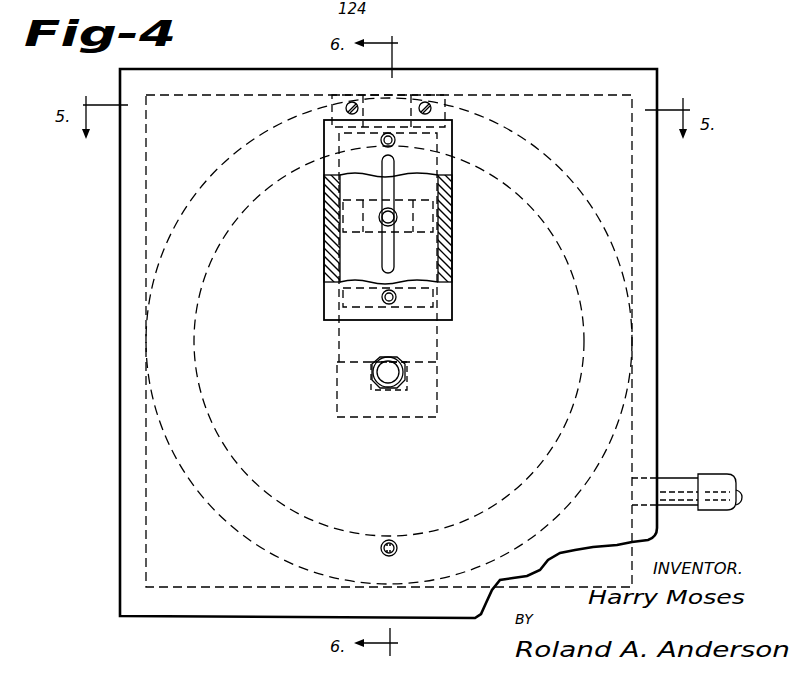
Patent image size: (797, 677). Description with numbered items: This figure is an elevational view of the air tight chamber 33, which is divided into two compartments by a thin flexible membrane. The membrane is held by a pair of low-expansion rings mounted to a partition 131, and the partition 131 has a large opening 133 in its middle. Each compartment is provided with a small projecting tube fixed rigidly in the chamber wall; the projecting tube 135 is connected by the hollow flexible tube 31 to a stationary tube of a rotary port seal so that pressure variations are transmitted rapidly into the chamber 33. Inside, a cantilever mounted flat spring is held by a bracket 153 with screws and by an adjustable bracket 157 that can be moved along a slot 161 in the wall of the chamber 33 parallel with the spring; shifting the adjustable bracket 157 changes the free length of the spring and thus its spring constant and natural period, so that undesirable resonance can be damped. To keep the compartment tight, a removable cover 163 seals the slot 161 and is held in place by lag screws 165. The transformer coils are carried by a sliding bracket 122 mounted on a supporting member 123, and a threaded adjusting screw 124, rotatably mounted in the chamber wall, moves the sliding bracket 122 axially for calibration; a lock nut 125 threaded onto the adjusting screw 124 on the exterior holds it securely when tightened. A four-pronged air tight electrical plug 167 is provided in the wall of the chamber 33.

The hollow flexible tube 31 is at (727, 487).
The air tight chamber 33 is at (666, 234).
The sliding bracket 122 is at (427, 345).
The supporting member 123 is at (425, 400).
The threaded adjusting screw 124 is at (378, 370).
The lock nut 125 is at (375, 362).
The partition 131 is at (585, 113).
The opening 133 is at (570, 334).
The projecting tube 135 is at (676, 476).
The bracket 153 is at (440, 113).
The adjustable bracket 157 is at (355, 237).
The slot 161 is at (390, 252).
The removable cover 163 is at (330, 292).
The lag screws 165 is at (396, 297).
The four-pronged air tight electrical plug 167 is at (397, 550).